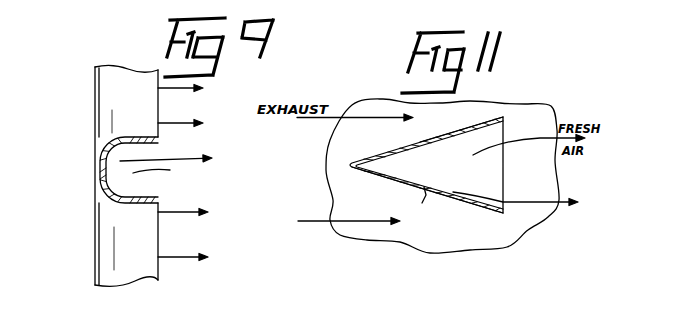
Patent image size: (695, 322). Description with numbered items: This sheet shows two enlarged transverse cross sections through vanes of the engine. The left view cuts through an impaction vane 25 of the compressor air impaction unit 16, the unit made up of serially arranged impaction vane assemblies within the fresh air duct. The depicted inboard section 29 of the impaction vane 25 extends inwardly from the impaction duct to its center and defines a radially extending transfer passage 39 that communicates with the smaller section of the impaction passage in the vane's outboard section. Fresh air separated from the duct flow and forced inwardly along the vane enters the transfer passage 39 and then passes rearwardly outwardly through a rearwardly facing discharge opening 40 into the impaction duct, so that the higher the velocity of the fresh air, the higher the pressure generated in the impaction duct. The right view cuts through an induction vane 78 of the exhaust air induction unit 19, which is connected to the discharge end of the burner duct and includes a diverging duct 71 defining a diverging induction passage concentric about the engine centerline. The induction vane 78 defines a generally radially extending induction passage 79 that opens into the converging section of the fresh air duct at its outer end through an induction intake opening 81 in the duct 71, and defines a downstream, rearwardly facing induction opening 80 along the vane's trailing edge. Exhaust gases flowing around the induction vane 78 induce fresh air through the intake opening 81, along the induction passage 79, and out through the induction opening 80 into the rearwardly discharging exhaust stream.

In FIG. 9, the compressor air impaction unit 16 is at (65, 89).
In FIG. 9, the inboard section 29 is at (93, 122).
In FIG. 9, the impaction vane 25 is at (172, 246).
In FIG. 9, the discharge opening 40 is at (165, 152).
In FIG. 9, the transfer passage 39 is at (125, 181).
In FIG. 11, the exhaust air induction unit 19 is at (423, 238).
In FIG. 11, the diverging duct 71 is at (484, 238).
In FIG. 11, the induction opening 80 is at (505, 139).
In FIG. 11, the induction intake opening 81 is at (500, 191).
In FIG. 11, the induction vane 78 is at (390, 194).
In FIG. 11, the induction passage 79 is at (427, 209).